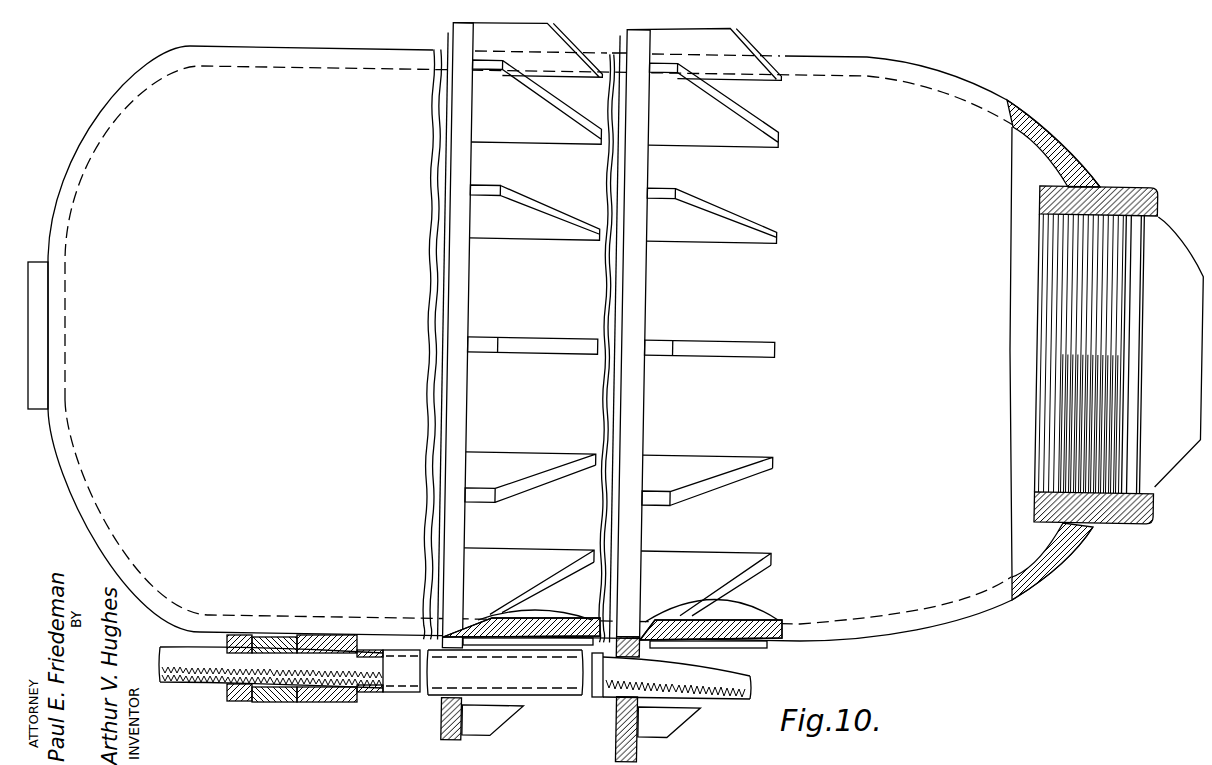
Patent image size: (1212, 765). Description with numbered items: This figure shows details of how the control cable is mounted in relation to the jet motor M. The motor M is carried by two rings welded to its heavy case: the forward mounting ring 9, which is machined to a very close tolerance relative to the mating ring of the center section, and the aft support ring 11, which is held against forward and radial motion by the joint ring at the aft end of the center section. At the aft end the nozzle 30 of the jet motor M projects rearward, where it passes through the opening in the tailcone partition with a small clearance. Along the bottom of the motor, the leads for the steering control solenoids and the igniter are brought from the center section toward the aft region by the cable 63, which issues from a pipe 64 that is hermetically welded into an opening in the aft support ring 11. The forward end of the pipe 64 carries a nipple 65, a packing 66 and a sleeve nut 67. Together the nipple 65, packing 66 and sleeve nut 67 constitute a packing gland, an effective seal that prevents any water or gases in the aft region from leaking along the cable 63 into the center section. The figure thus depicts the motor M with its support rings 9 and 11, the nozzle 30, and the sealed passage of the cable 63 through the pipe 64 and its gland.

The jet motor M is at (306, 323).
The forward mounting ring 9 is at (473, 300).
The aft support ring 11 is at (650, 302).
The nozzle 30 is at (1186, 255).
The cable 63 is at (190, 683).
The pipe 64 is at (562, 697).
The nipple 65 is at (314, 705).
The packing 66 is at (287, 704).
The sleeve nut 67 is at (242, 704).